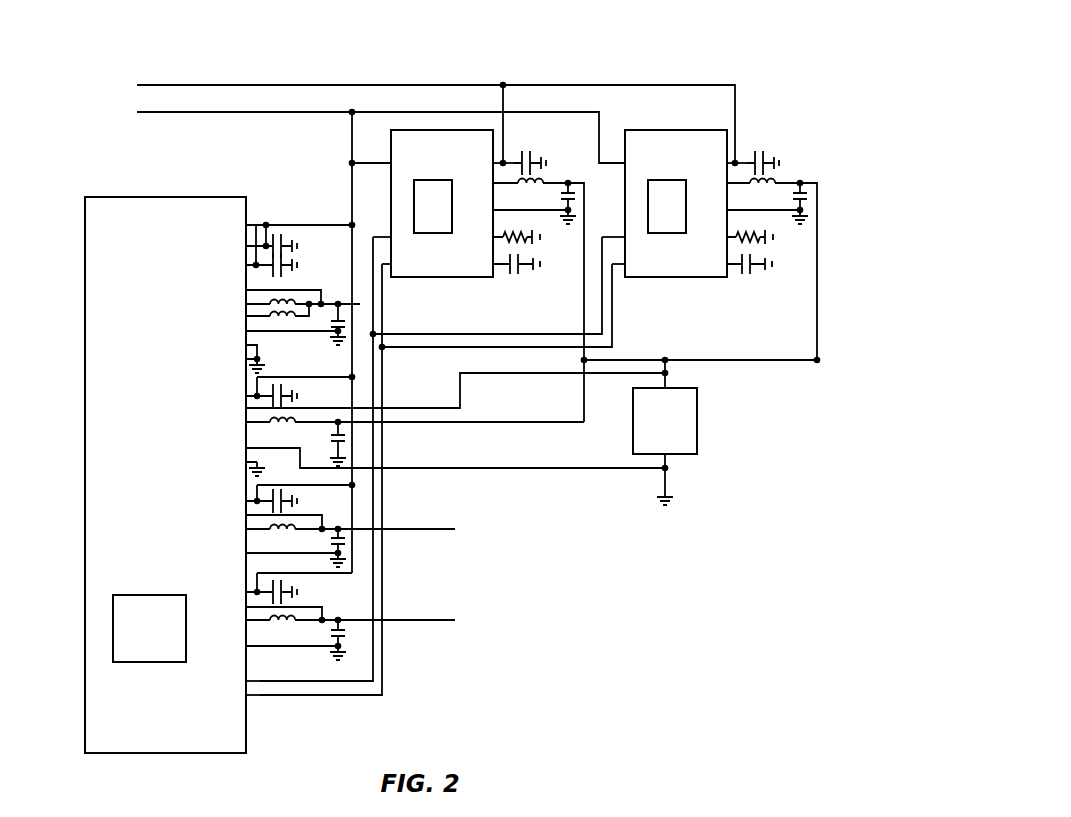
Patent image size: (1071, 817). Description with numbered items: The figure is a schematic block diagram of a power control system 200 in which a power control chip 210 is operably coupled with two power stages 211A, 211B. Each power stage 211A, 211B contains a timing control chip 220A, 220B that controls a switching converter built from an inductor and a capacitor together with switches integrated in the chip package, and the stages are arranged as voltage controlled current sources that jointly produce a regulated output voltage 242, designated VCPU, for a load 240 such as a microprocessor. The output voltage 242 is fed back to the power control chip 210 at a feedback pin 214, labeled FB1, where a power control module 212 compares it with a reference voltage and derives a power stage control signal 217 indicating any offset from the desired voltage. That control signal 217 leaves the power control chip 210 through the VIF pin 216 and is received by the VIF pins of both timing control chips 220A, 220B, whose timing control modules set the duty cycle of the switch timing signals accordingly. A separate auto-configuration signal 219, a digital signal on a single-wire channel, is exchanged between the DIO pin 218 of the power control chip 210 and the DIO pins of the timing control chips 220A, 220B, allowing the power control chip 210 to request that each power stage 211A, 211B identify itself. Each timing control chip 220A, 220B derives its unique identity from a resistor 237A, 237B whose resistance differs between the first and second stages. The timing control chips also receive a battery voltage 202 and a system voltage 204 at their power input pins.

The power control system 200 is at (552, 47).
The battery voltage 202 is at (647, 85).
The system voltage 204 is at (270, 113).
The power control chip 210 is at (346, 475).
The first power stage 211A is at (532, 134).
The second power stage 211B is at (760, 123).
The power control module 212 is at (149, 628).
The feedback pin 214 is at (226, 408).
The VIF pin 216 is at (226, 682).
The power stage control signal 217 is at (280, 682).
The DIO pin 218 is at (226, 696).
The auto-configuration signal 219 is at (335, 696).
The first timing control chip 220A is at (400, 279).
The second timing control chip 220B is at (634, 279).
The first resistor 237A is at (506, 235).
The second resistor 237B is at (740, 236).
The load 240 is at (697, 433).
The output voltage 242 is at (772, 362).